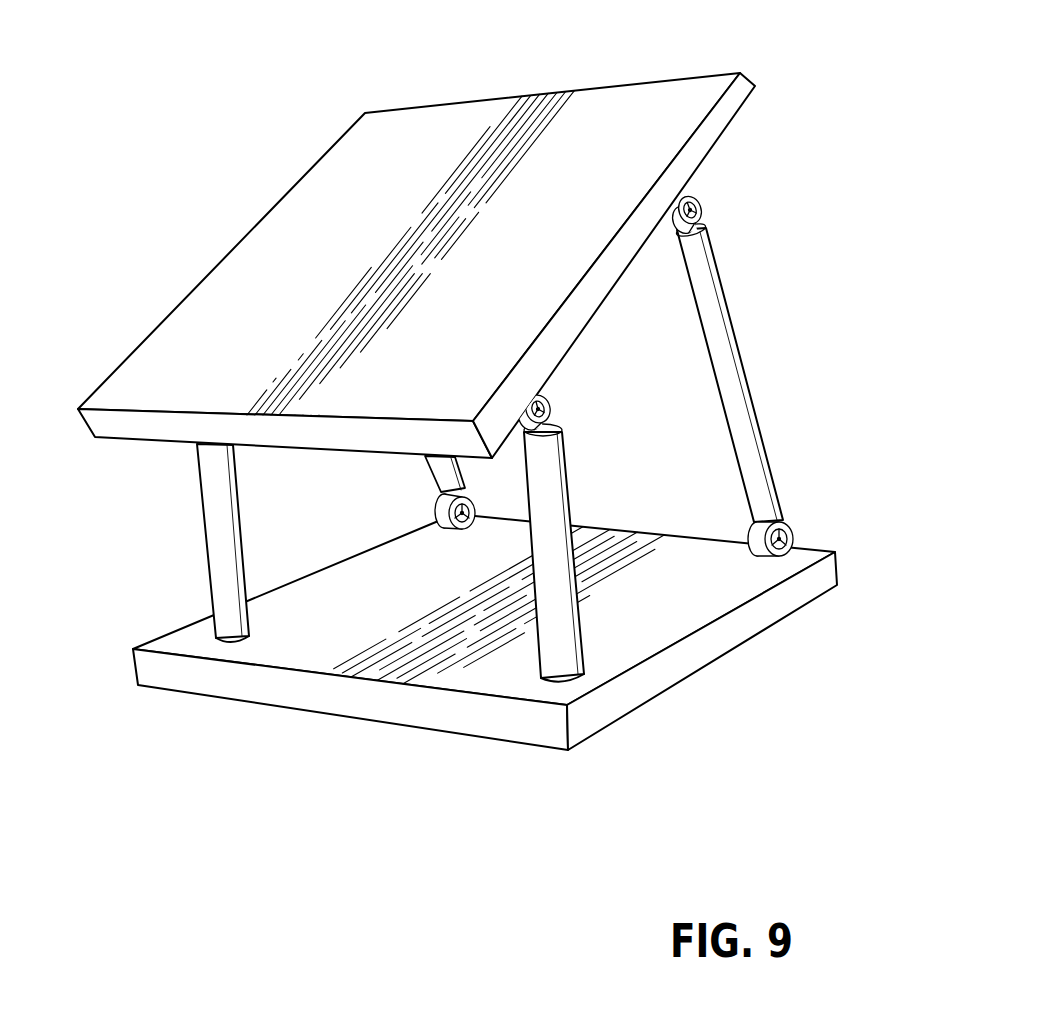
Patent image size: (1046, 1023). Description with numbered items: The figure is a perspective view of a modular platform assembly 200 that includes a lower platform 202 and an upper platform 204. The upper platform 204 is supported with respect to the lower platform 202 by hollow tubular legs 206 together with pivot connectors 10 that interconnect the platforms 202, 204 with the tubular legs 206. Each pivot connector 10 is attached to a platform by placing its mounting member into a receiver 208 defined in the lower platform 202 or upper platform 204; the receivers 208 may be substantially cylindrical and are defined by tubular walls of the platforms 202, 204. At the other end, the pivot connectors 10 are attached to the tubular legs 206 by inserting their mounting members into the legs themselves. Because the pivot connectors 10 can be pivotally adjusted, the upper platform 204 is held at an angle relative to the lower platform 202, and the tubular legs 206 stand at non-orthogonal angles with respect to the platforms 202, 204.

The modular platform assembly 200 is at (138, 210).
The lower platform 202 is at (742, 643).
The upper platform 204 is at (415, 115).
The tubular legs 206 is at (738, 388).
The receivers 208 is at (470, 524).
The pivot connector 10 is at (696, 204).